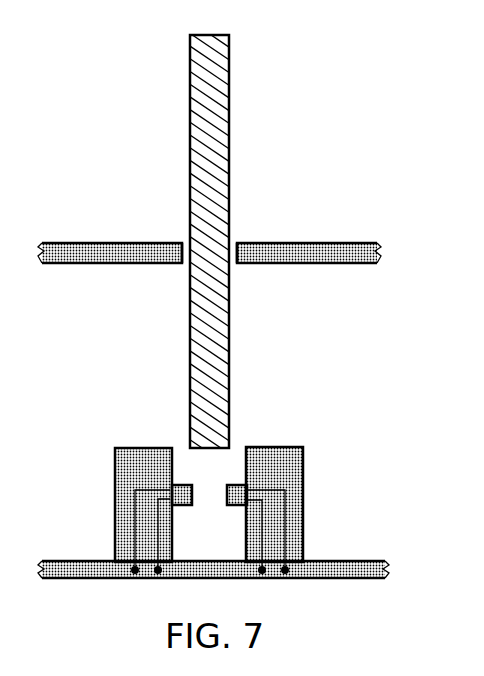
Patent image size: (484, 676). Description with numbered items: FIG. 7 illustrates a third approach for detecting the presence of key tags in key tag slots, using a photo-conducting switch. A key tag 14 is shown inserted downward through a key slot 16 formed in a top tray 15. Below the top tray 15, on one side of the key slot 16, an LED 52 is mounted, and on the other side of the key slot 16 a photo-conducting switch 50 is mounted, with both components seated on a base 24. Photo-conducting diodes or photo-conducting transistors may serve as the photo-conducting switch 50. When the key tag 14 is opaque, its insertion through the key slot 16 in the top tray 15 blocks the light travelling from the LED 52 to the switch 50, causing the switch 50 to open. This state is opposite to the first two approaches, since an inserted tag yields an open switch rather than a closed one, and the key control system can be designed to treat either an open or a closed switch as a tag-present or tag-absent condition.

The key tag 14 is at (232, 183).
The top tray 15 is at (312, 242).
The key slot 16 is at (232, 242).
The base 24 is at (332, 558).
The photo-conducting switch 50 is at (238, 505).
The LED 52 is at (182, 483).